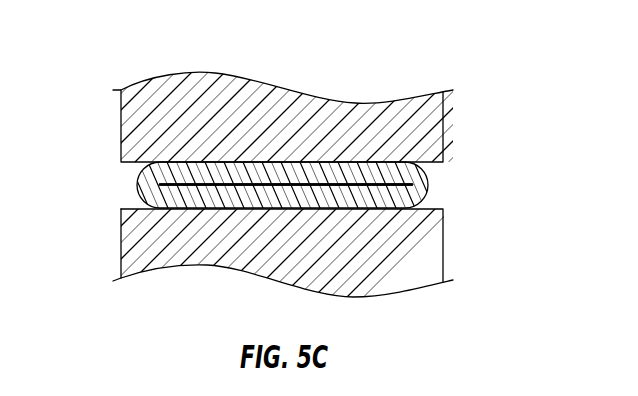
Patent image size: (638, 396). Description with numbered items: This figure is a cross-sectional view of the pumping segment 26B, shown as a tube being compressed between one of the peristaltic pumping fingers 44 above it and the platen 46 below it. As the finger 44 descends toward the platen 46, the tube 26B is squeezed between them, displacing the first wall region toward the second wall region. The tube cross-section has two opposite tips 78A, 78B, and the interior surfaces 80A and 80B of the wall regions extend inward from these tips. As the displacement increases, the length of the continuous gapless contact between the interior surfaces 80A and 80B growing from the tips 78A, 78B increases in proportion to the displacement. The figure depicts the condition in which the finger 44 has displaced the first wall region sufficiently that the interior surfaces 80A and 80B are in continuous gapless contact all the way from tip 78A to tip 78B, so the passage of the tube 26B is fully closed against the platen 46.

The peristaltic pumping finger 44 is at (128, 123).
The platen 46 is at (128, 242).
The tip 78A is at (146, 174).
The tip 78B is at (398, 166).
The interior surface 80A is at (355, 187).
The interior surface 80B is at (297, 184).
The pumping segment 26B is at (448, 173).